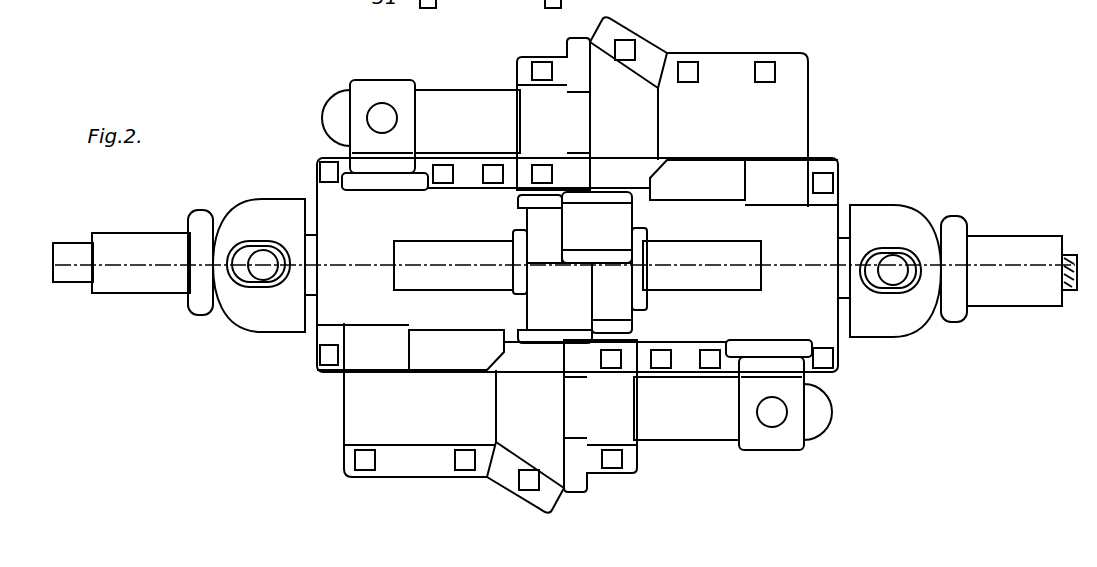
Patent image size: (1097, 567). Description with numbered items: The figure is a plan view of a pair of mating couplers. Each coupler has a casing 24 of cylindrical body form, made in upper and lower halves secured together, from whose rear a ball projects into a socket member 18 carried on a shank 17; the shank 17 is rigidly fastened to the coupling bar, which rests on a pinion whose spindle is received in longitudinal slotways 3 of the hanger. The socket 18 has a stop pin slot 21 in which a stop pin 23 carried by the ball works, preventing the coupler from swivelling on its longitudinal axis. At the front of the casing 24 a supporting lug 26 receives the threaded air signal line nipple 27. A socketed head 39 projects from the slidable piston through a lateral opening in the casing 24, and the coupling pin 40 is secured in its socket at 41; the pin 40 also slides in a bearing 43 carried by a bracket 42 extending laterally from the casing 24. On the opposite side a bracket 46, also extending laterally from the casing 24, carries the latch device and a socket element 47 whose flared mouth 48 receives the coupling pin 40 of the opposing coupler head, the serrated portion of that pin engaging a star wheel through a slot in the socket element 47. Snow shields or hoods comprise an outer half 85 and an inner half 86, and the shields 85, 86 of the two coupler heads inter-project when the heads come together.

The longitudinal slotway 3 is at (53, 265).
The shank 17 is at (160, 280).
The socket member 18 is at (267, 317).
The stop pin slot 21 is at (258, 244).
The stop pin 23 is at (265, 262).
The coupler casing 24 is at (565, 265).
The supporting lug 26 is at (525, 246).
The air signal line nipple 27 is at (460, 278).
The socketed head 39 is at (388, 88).
The coupling pin 40 is at (458, 98).
The securing point of coupling pin 41 is at (380, 118).
The bracket 42 is at (567, 175).
The bearing 43 is at (557, 118).
The bracket 46 is at (813, 188).
The socket element 47 is at (797, 107).
The flared mouth 48 is at (630, 78).
The outer snow shield 85 is at (575, 267).
The inner snow shield 86 is at (537, 237).